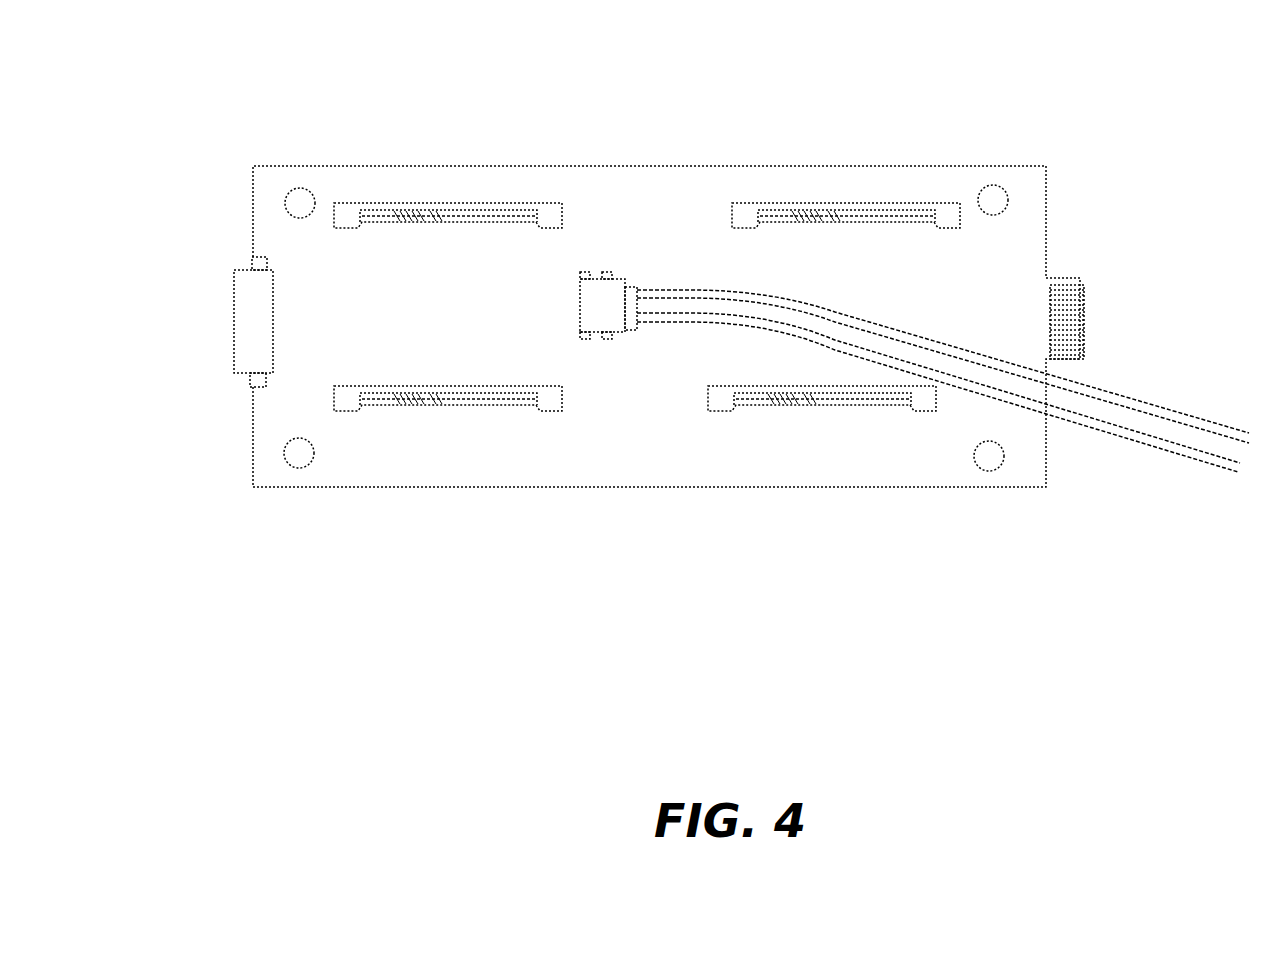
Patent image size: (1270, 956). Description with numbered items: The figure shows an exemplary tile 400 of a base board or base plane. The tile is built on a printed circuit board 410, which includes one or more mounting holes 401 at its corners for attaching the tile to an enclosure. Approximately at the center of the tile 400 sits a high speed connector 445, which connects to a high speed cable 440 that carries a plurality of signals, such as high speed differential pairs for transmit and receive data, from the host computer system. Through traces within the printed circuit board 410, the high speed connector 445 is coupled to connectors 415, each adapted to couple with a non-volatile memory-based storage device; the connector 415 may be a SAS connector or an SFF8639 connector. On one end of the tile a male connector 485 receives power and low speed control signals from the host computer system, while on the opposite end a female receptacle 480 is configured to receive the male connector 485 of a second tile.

The tile 400 is at (527, 178).
The mounting holes 401 is at (997, 193).
The printed circuit board 410 is at (469, 462).
The connector 415 is at (868, 392).
The high speed cable 440 is at (1172, 415).
The high speed connector 445 is at (597, 322).
The female receptacle 480 is at (247, 347).
The male connector 485 is at (1078, 297).